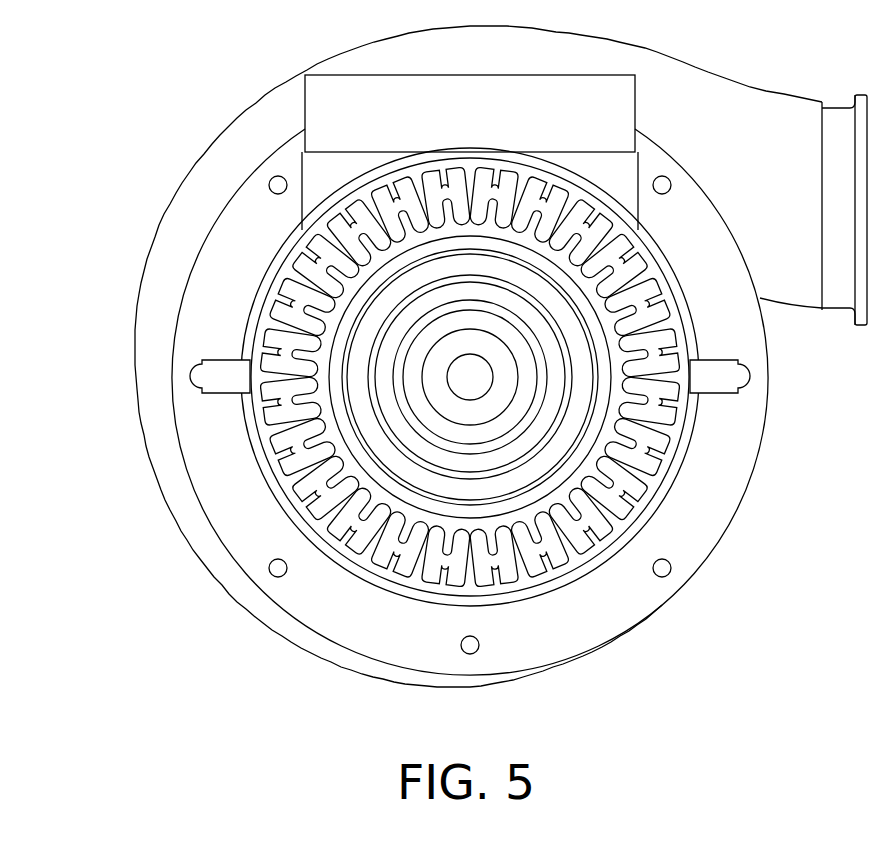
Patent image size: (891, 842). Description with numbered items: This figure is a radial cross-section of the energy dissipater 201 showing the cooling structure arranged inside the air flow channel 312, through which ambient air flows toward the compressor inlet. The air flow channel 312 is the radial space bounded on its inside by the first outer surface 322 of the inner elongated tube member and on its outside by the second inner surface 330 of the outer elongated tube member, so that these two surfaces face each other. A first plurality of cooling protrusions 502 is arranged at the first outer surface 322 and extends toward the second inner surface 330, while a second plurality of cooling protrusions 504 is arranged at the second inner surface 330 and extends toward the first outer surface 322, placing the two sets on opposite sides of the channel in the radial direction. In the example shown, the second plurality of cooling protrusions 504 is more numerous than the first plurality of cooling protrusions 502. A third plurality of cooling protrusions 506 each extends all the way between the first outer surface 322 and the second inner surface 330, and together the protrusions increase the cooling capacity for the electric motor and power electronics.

The energy dissipater 201 is at (116, 82).
The first plurality of cooling protrusions 502 is at (300, 400).
The second plurality of cooling protrusions 504 is at (340, 535).
The third plurality of cooling protrusions 506 is at (668, 427).
The air flow channel 312 is at (660, 448).
The second inner surface 330 is at (672, 490).
The first outer surface 322 is at (587, 570).